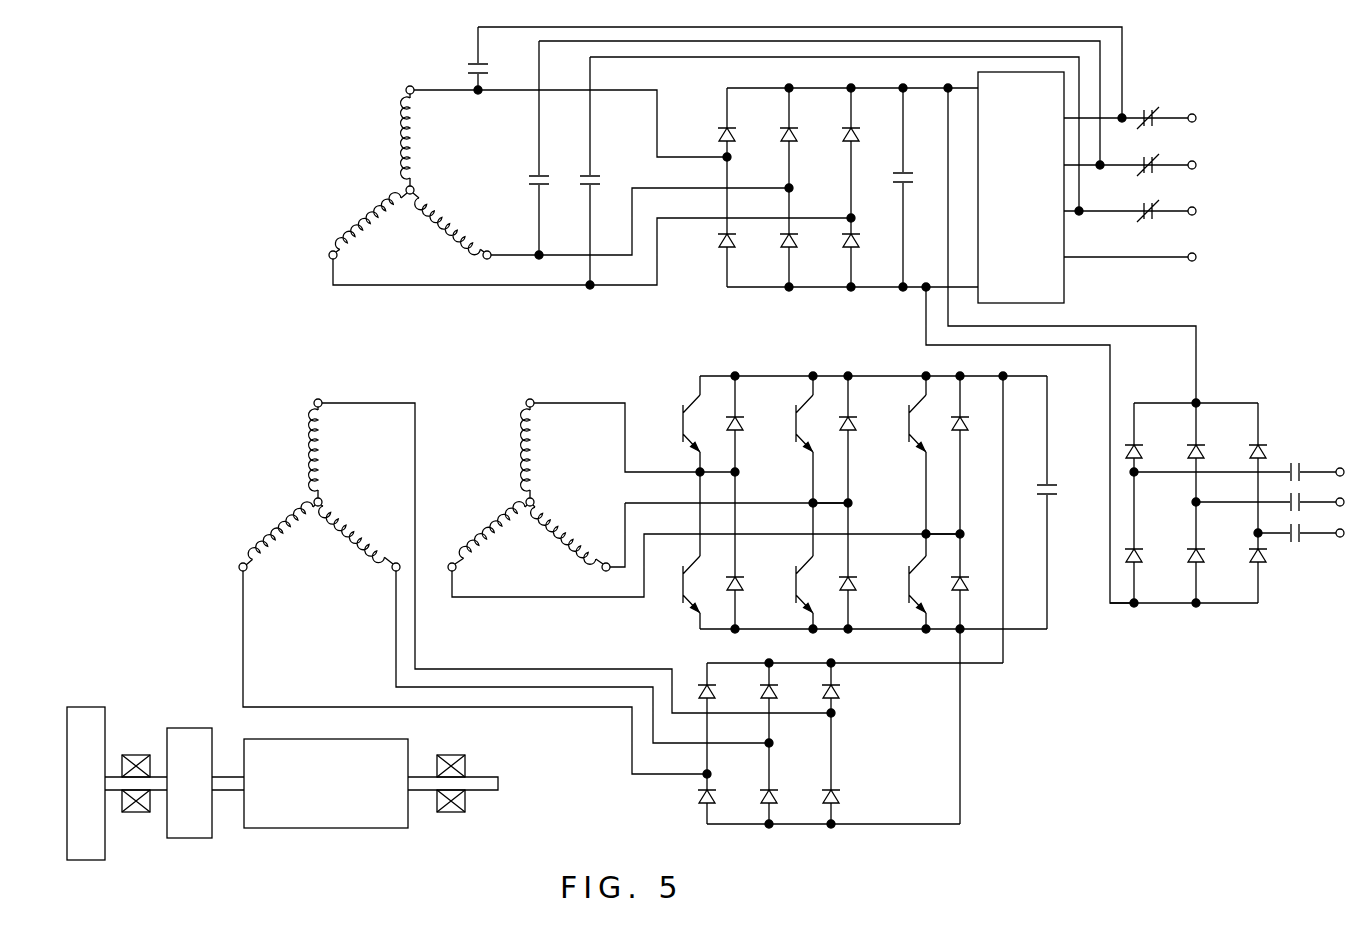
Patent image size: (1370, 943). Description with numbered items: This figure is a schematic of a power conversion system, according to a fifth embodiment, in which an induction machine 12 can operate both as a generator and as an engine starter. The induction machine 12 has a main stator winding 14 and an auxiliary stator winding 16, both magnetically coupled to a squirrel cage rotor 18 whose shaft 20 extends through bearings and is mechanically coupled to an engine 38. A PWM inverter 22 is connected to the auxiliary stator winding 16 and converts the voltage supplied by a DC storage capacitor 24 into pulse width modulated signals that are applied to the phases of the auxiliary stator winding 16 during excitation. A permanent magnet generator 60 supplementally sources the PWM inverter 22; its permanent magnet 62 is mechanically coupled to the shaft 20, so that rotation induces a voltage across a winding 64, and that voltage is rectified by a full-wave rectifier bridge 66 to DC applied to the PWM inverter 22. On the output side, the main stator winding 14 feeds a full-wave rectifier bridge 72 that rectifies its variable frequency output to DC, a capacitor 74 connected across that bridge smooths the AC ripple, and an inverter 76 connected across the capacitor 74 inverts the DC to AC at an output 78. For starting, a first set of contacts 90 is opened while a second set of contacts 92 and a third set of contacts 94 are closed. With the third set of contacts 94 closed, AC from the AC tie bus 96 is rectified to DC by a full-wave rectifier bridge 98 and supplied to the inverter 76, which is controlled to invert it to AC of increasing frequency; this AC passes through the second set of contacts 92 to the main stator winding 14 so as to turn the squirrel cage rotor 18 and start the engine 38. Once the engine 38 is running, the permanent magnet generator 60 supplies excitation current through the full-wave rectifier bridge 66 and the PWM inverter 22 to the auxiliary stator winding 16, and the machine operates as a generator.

The induction machine 12 is at (352, 103).
The main stator winding 14 is at (393, 182).
The auxiliary stator winding 16 is at (511, 494).
The squirrel cage rotor 18 is at (295, 829).
The shaft 20 is at (482, 791).
The PWM inverter 22 is at (681, 628).
The DC storage capacitor 24 is at (1050, 497).
The engine 38 is at (83, 707).
The permanent magnet generator 60 is at (348, 385).
The permanent magnet 62 is at (194, 839).
The winding 64 is at (301, 494).
The full-wave rectifier bridge 66 is at (797, 840).
The full-wave rectifier bridge 72 is at (754, 298).
The capacitor 74 is at (912, 166).
The inverter 76 is at (1066, 293).
The output 78 is at (1249, 156).
The first set of contacts 90 is at (1173, 88).
The second set of contacts 92 is at (473, 60).
The third set of contacts 94 is at (1303, 554).
The AC tie bus 96 is at (1325, 461).
The full-wave rectifier bridge 98 is at (1179, 592).